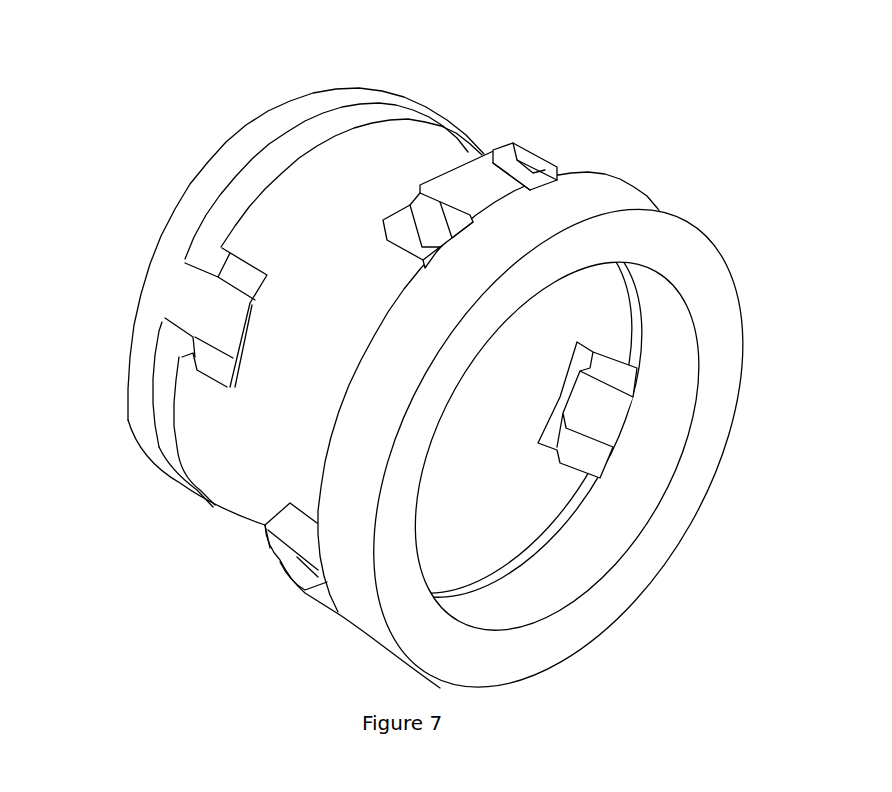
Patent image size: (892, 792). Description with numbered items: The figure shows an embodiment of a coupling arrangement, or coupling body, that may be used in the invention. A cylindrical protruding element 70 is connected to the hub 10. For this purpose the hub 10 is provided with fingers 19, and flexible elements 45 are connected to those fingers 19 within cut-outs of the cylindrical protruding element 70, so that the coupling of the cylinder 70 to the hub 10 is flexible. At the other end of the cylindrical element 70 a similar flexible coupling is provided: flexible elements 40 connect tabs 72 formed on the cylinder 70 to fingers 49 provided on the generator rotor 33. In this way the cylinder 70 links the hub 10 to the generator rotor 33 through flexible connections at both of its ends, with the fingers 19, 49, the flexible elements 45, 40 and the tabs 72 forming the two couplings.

The hub 10 is at (225, 168).
The cylindrical protruding element 70 is at (397, 147).
The generator rotor 33 is at (587, 198).
The fingers 49 is at (470, 190).
The flexible elements 40 is at (510, 163).
The tabs 72 is at (550, 165).
The fingers 19 is at (195, 307).
The flexible elements 45 is at (205, 357).